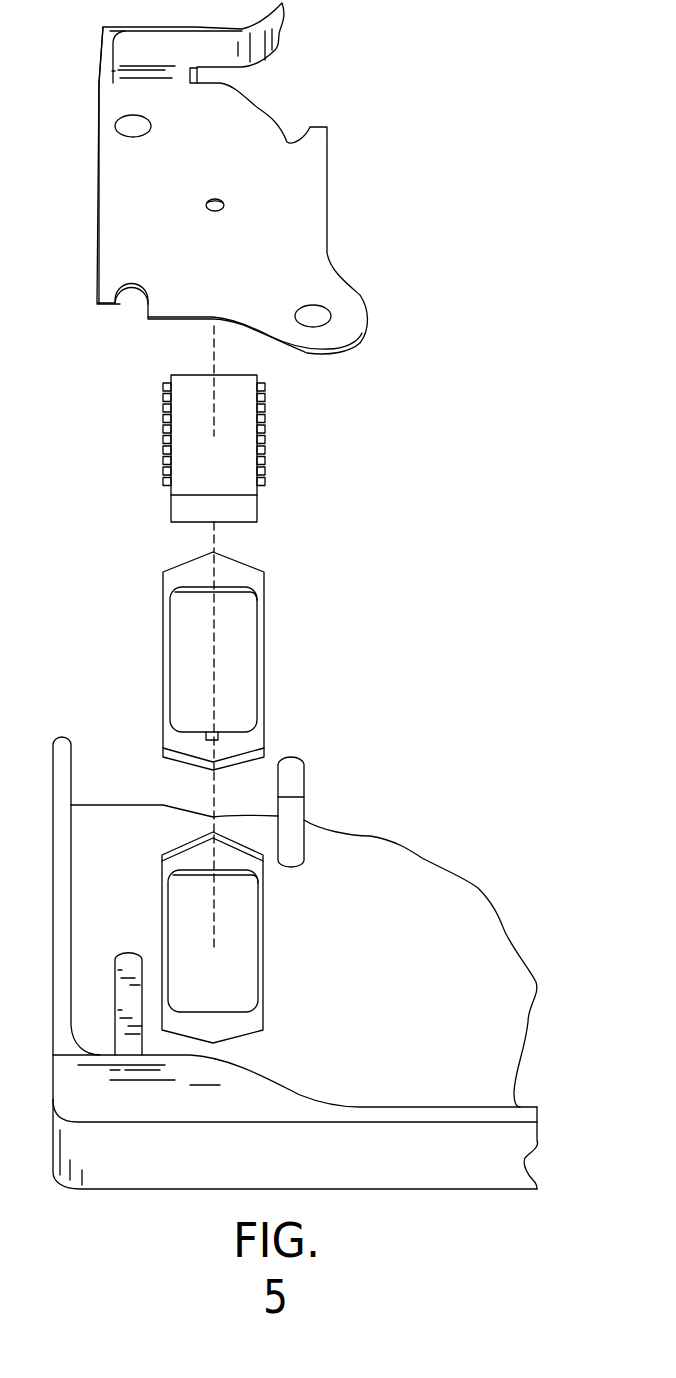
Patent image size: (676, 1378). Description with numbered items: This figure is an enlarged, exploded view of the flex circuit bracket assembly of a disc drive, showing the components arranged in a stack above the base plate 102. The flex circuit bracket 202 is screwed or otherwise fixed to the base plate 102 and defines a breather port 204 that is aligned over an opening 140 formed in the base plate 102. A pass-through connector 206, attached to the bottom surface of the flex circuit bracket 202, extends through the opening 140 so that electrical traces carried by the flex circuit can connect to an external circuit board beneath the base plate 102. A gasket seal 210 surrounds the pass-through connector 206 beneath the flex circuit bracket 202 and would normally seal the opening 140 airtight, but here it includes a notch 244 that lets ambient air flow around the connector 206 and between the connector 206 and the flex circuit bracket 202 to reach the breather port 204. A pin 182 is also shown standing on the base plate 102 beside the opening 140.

The base plate 102 is at (477, 1177).
The opening 140 is at (250, 1000).
The pin 182 is at (304, 803).
The flex circuit bracket 202 is at (313, 223).
The breather port 204 is at (222, 199).
The pass-through connector 206 is at (258, 507).
The gasket seal 210 is at (264, 730).
The notch 244 is at (203, 732).